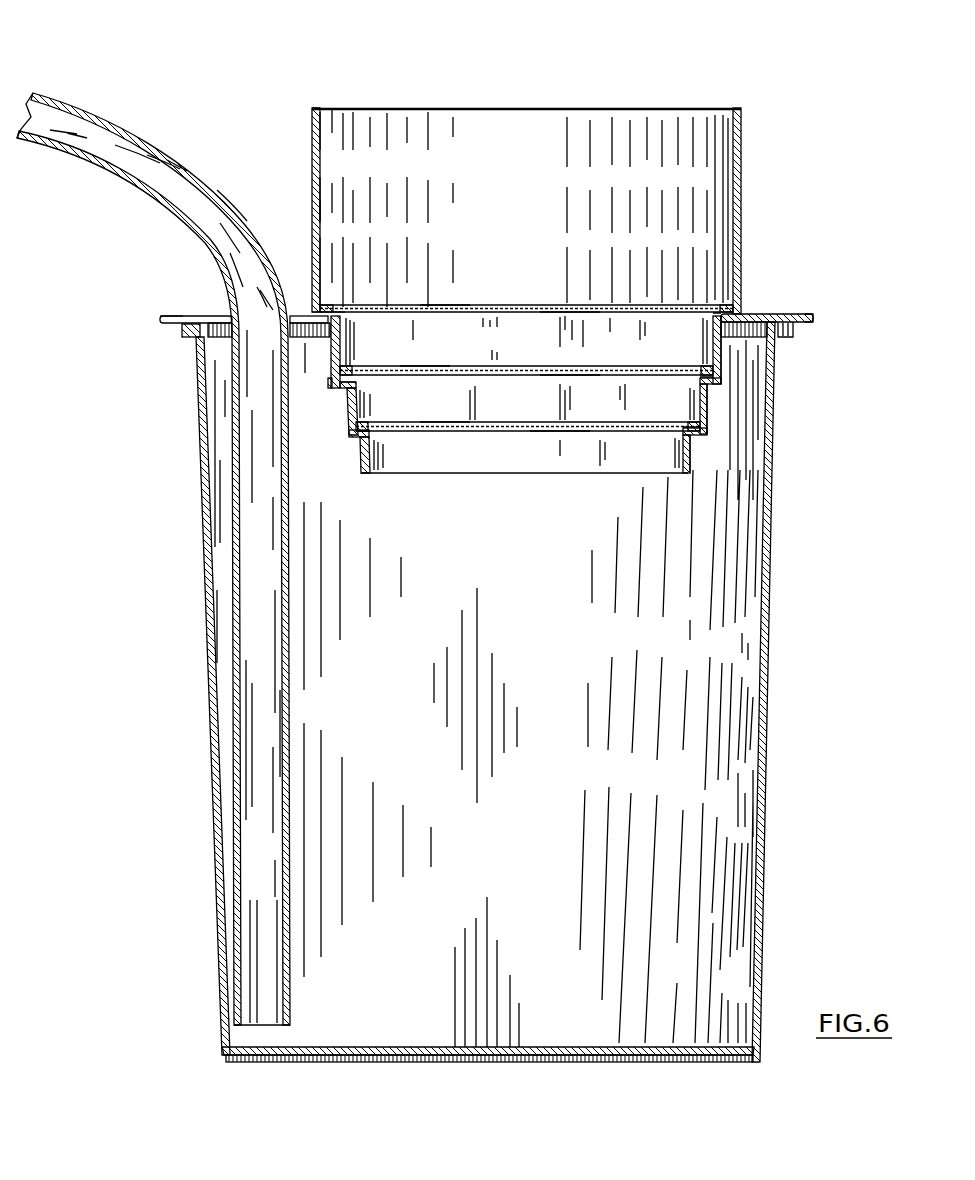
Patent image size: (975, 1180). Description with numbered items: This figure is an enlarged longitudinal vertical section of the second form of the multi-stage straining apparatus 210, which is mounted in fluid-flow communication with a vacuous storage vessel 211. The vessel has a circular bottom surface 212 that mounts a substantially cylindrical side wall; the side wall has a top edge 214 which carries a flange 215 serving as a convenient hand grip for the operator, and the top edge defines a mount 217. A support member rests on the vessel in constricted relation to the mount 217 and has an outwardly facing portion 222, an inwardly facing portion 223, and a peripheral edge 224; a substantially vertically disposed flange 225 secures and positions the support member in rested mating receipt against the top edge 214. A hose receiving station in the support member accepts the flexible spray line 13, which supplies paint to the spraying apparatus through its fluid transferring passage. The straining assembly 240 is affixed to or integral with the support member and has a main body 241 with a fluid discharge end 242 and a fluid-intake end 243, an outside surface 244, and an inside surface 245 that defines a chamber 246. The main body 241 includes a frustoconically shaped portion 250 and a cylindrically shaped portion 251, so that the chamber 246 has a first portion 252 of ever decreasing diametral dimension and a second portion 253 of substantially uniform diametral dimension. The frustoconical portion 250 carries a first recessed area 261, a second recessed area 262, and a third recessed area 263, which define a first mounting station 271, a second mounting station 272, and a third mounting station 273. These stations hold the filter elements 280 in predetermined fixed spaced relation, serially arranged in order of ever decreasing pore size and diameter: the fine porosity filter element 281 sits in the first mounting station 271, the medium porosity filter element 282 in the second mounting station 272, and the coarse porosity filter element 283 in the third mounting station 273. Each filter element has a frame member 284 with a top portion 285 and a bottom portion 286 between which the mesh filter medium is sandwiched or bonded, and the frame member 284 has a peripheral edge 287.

The flexible spray line 13 is at (143, 133).
The multi-stage straining apparatus 210 is at (703, 82).
The vacuous storage vessel 211 is at (208, 662).
The bottom surface 212 is at (408, 1046).
The top edge 214 is at (192, 337).
The flange 215 is at (183, 328).
The mount 217 is at (210, 363).
The outwardly facing portion 222 is at (774, 313).
The inwardly facing portion 223 is at (775, 380).
The peripheral edge 224 is at (813, 318).
The vertically disposed flange 225 is at (775, 338).
The straining assembly 240 is at (770, 158).
The main body 241 is at (316, 316).
The fluid discharge end 242 is at (368, 474).
The fluid-intake end 243 is at (313, 110).
The outside surface 244 is at (312, 148).
The inside surface 245 is at (322, 210).
The chamber 246 is at (545, 195).
The frustoconically shaped portion 250 is at (322, 390).
The cylindrically shaped portion 251 is at (745, 182).
The first chamber portion 252 is at (537, 344).
The second chamber portion 253 is at (498, 125).
The first recessed area 261 is at (370, 436).
The second recessed area 262 is at (357, 384).
The third recessed area 263 is at (350, 318).
The first mounting station 271 is at (545, 434).
The second mounting station 272 is at (552, 378).
The third mounting station 273 is at (557, 314).
The filter elements 280 is at (480, 306).
The fine porosity filter element 281 is at (436, 421).
The medium porosity filter element 282 is at (406, 368).
The coarse porosity filter element 283 is at (420, 304).
The frame member 284 is at (333, 306).
The top portion 285 is at (718, 306).
The bottom portion 286 is at (715, 314).
The peripheral edge 287 is at (738, 303).